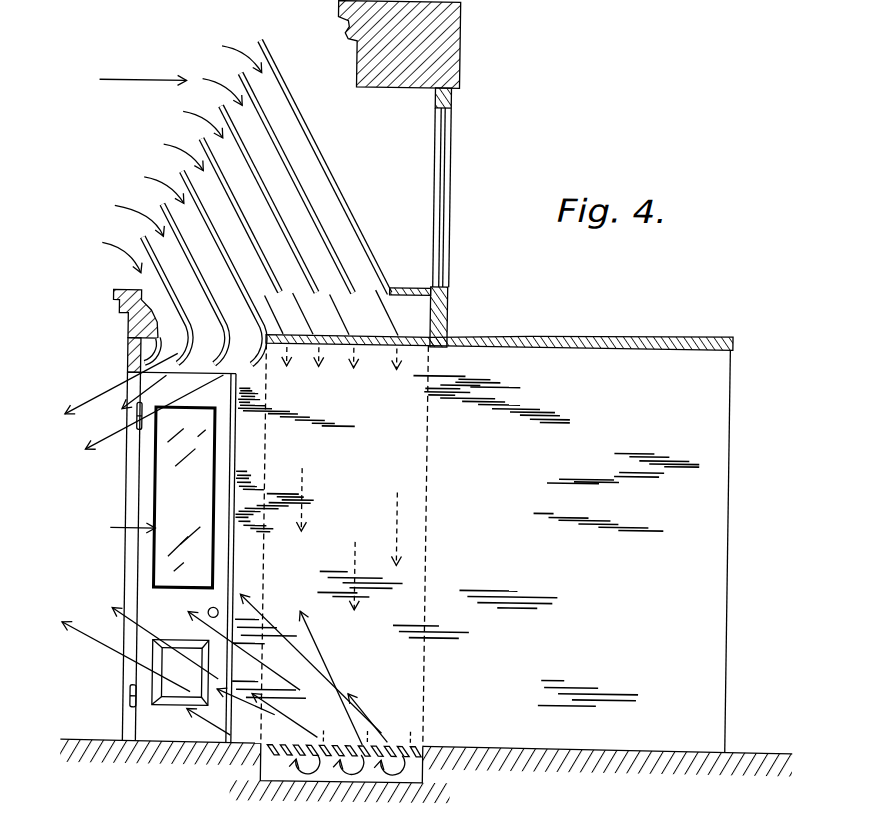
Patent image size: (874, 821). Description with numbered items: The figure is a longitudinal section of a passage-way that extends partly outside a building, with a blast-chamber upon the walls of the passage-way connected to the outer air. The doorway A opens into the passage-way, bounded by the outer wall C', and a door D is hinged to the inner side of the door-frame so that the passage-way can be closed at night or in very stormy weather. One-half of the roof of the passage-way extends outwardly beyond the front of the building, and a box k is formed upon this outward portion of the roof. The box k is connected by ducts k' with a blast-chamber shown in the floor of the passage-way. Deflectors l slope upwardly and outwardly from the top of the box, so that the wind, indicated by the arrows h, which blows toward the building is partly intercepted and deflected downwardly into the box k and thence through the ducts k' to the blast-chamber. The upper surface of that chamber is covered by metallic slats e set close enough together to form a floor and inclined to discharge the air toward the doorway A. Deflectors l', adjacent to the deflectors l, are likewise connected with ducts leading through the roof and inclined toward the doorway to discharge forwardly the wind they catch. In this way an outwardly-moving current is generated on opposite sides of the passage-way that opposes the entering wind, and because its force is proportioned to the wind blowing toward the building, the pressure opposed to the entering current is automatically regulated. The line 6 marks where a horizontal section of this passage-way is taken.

The doorway A is at (415, 144).
The deflectors l is at (286, 202).
The deflectors l' is at (155, 283).
The arrows indicating the wind h is at (173, 288).
The box k is at (356, 316).
The ducts k' is at (442, 546).
The door D is at (233, 455).
The outer wall C' is at (750, 551).
The section line 6 is at (153, 605).
The metallic slats e is at (406, 744).